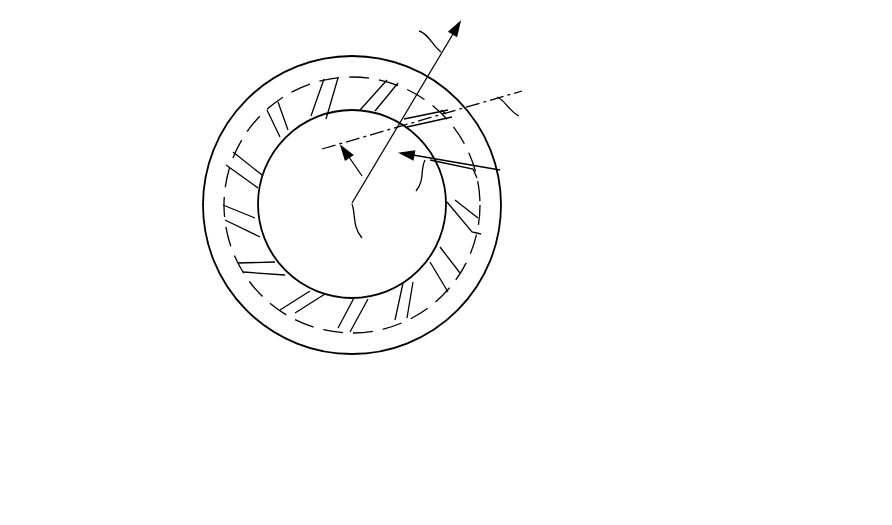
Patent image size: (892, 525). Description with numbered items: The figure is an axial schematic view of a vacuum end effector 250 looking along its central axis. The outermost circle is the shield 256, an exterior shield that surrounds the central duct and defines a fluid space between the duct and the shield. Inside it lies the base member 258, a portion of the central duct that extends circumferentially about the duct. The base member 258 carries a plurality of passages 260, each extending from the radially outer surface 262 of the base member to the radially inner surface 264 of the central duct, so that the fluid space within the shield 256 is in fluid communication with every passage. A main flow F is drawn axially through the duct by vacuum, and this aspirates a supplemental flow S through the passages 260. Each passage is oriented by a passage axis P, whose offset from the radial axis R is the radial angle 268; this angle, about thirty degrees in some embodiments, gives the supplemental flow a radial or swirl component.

The vacuum end effector 250 is at (145, 73).
The shield 256 is at (503, 201).
The base member 258 is at (457, 247).
The plurality of passages 260 is at (278, 124).
The radially outer surface 262 is at (378, 331).
The radially inner surface 264 is at (337, 299).
The radial angle 268 is at (351, 174).